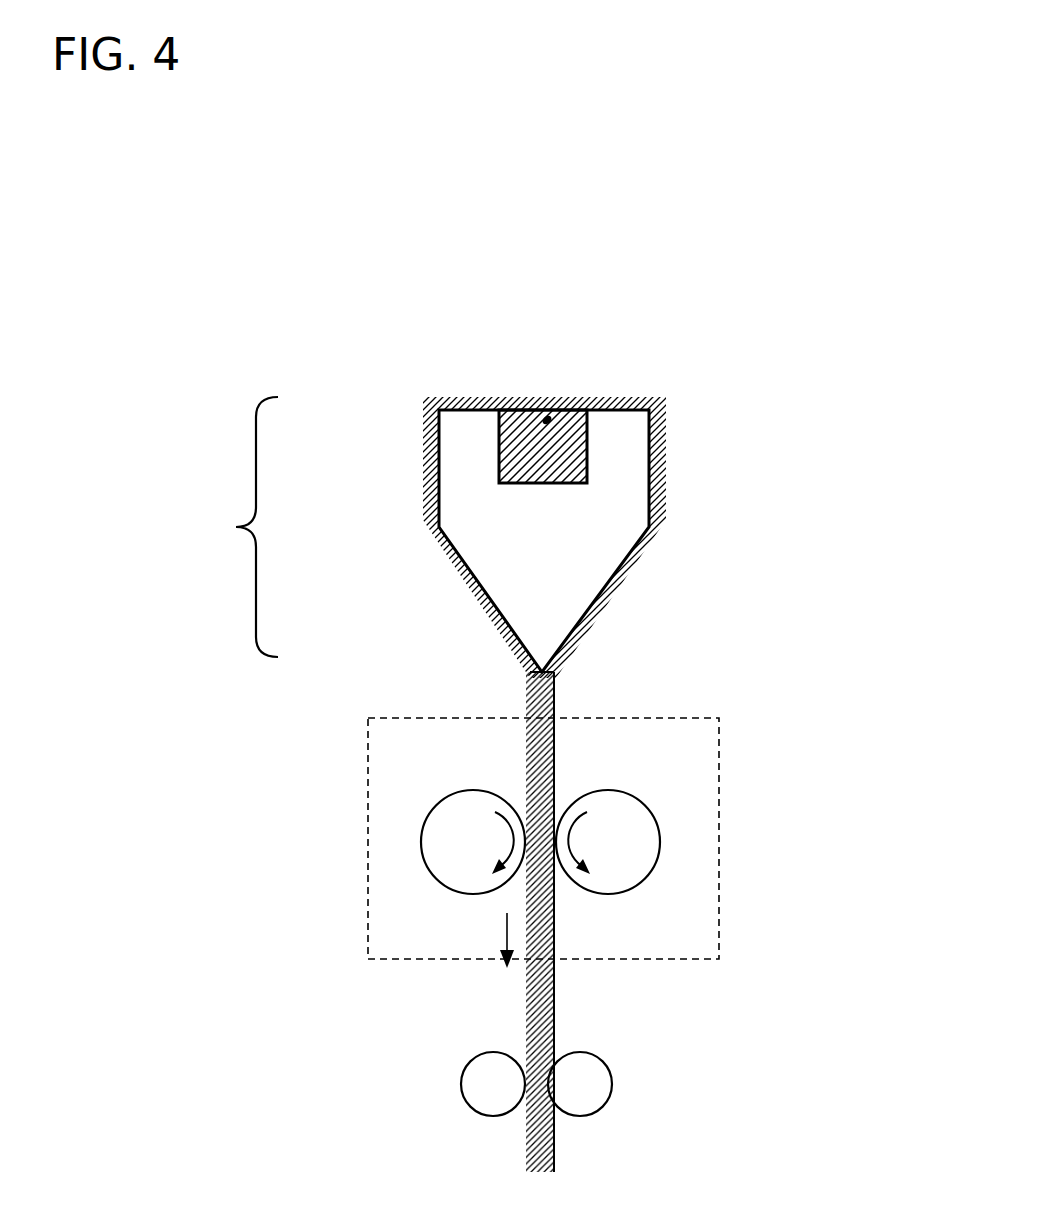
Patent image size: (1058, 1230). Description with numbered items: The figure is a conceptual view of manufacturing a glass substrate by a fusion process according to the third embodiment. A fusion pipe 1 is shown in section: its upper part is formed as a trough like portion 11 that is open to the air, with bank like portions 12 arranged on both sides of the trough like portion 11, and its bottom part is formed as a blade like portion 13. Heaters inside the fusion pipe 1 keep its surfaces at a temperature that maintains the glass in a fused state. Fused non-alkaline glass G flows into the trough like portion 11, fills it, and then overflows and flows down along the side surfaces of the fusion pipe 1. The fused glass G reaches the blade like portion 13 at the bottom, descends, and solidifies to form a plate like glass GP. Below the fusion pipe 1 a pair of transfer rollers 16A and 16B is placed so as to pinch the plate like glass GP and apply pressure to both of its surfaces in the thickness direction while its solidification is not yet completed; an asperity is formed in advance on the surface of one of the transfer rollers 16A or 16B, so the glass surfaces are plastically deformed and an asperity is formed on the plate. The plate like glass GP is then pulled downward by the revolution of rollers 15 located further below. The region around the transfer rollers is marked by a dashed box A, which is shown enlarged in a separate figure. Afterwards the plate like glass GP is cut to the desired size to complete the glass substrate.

The fusion pipe 1 is at (240, 527).
The trough like portion 11 is at (588, 418).
The bank like portion 12 is at (460, 397).
The blade like portion 13 is at (545, 657).
The fused non-alkaline glass G is at (548, 419).
The plate like glass GP is at (550, 995).
The box A (portion shown enlarged) A is at (722, 772).
The transfer roller 16A is at (648, 845).
The transfer roller 16B is at (447, 853).
The rollers 15 is at (602, 1085).